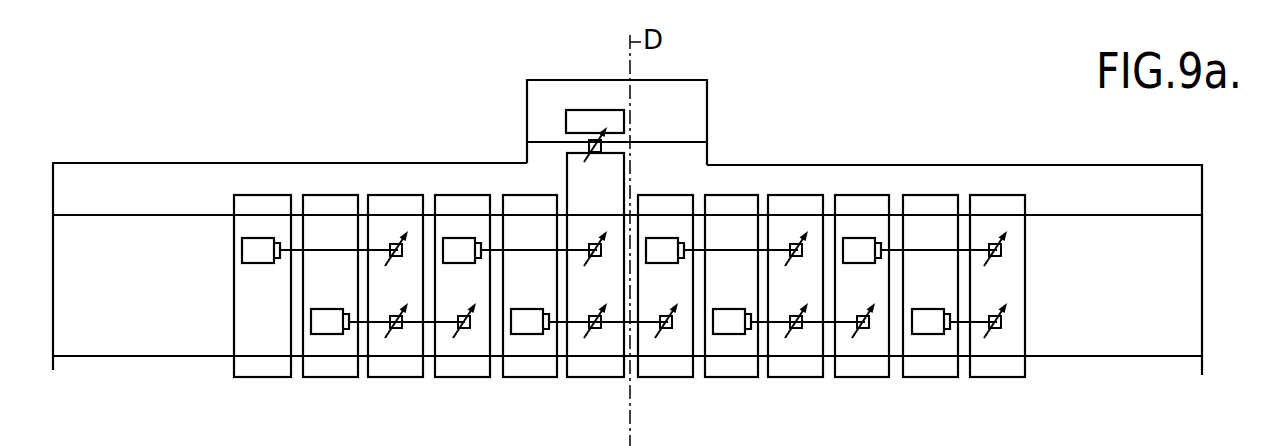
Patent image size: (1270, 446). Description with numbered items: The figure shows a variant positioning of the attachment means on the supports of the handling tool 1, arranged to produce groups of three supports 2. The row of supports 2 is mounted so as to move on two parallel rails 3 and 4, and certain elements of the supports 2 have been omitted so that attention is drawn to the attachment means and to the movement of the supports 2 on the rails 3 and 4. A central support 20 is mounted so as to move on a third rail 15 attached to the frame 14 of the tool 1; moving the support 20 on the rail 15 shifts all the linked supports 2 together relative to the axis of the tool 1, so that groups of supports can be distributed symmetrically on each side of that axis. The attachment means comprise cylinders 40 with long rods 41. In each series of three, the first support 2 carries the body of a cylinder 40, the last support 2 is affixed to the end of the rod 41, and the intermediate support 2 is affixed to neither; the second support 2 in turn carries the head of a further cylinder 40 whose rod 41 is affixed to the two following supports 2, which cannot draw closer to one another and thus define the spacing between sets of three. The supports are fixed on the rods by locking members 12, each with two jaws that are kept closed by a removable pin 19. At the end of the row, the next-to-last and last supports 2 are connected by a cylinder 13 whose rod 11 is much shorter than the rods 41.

The handling tool 1 is at (727, 83).
The support 2 is at (273, 192).
The rail 3 is at (1050, 216).
The rail 4 is at (1038, 357).
The rod 11 is at (963, 323).
The locking member 12 is at (393, 246).
The cylinder 13 is at (923, 334).
The frame 14 is at (700, 79).
The third rail 15 is at (682, 141).
The pin 19 is at (988, 329).
The support 20 is at (575, 169).
The cylinder 40 is at (253, 238).
The rod 41 is at (332, 250).